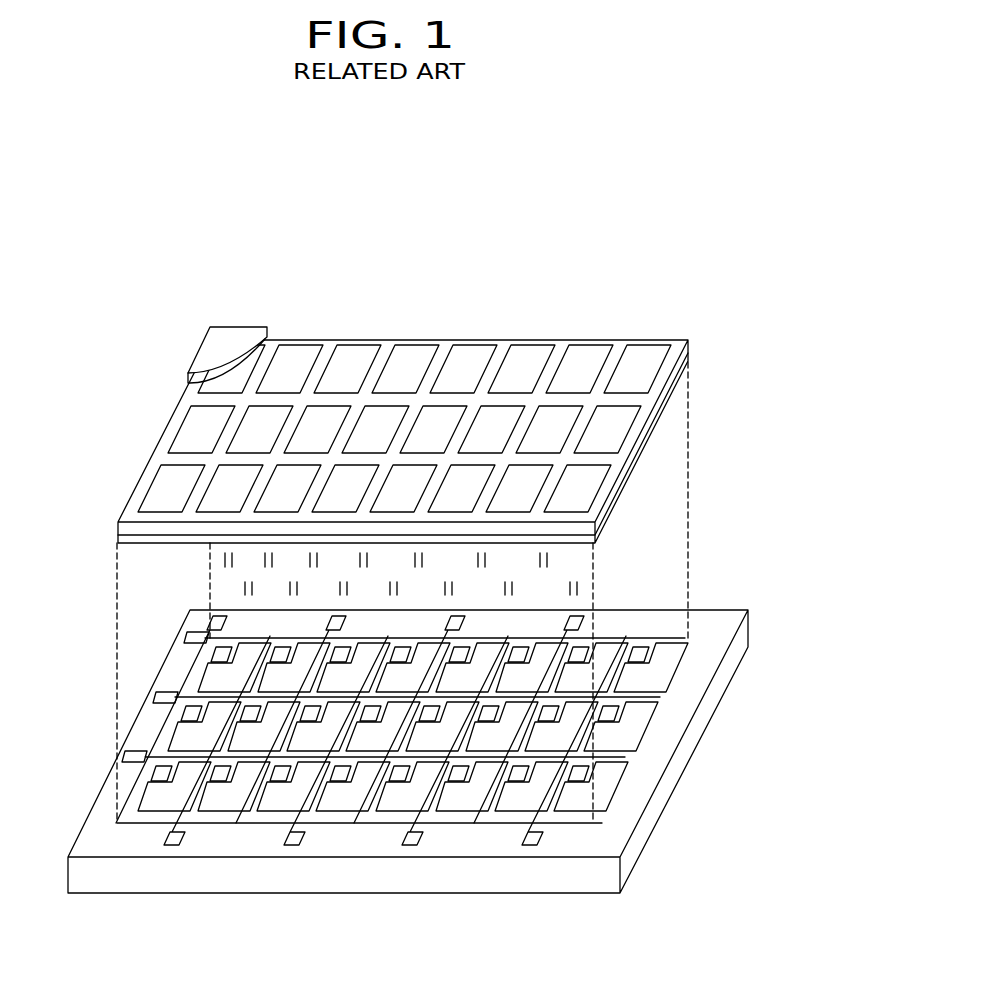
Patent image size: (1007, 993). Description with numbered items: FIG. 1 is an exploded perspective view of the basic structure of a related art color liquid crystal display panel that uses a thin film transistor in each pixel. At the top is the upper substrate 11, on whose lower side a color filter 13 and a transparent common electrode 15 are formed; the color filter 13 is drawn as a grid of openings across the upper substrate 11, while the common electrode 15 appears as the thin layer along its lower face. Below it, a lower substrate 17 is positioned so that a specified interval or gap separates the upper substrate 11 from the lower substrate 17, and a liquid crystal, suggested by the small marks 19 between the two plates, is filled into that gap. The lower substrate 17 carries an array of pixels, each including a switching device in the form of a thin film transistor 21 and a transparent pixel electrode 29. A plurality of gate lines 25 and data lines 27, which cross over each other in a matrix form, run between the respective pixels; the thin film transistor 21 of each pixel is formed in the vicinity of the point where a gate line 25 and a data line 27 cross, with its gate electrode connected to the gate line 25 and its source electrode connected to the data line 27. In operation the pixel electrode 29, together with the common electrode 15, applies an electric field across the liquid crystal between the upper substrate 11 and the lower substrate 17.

The upper substrate 11 is at (468, 394).
The color filter 13 is at (593, 360).
The transparent common electrode 15 is at (577, 540).
The lower substrate 17 is at (757, 662).
The liquid crystal layer 19 is at (592, 586).
The thin film transistor 21 is at (160, 769).
The gate line 25 is at (618, 757).
The data line 27 is at (420, 846).
The transparent pixel electrode 29 is at (630, 716).